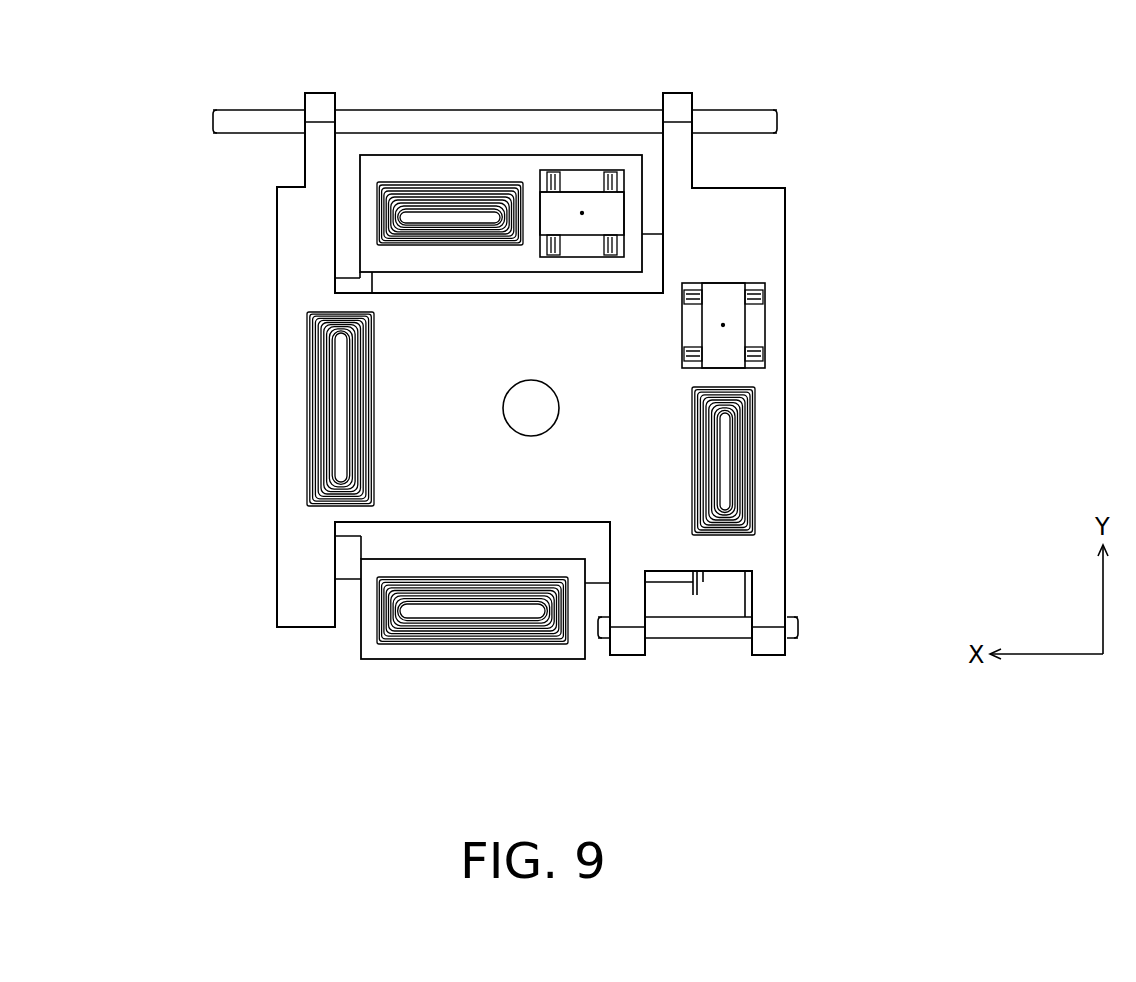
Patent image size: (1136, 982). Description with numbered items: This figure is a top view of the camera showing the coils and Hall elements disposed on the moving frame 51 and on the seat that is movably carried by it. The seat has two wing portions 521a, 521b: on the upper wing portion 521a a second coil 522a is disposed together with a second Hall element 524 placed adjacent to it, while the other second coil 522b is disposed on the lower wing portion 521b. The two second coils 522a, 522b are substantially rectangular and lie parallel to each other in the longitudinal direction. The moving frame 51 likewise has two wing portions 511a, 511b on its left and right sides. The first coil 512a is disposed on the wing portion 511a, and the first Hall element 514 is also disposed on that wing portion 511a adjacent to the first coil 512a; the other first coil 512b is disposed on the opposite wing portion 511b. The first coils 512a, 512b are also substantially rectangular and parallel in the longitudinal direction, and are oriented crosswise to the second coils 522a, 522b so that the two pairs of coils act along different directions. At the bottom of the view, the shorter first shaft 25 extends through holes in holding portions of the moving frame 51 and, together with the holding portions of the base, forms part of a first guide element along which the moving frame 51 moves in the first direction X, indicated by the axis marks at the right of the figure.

The moving frame 51 is at (789, 223).
The wing portion 511a is at (789, 436).
The wing portion 511b is at (274, 436).
The first coil 512a is at (758, 489).
The first coil 512b is at (304, 488).
The first Hall element 514 is at (768, 326).
The wing portion 521a is at (528, 152).
The wing portion 521b is at (539, 663).
The second coil 522a is at (456, 179).
The second coil 522b is at (430, 646).
The second Hall element 524 is at (586, 182).
The first shaft 25 is at (713, 630).